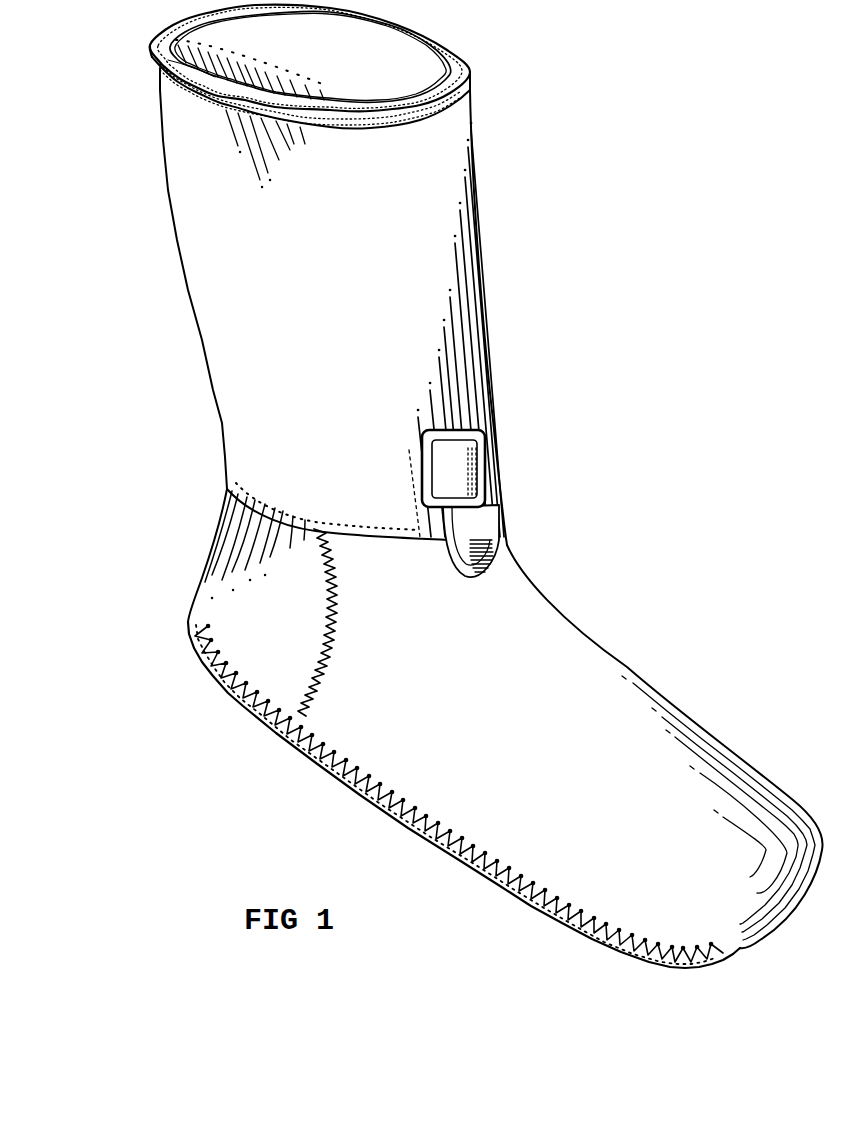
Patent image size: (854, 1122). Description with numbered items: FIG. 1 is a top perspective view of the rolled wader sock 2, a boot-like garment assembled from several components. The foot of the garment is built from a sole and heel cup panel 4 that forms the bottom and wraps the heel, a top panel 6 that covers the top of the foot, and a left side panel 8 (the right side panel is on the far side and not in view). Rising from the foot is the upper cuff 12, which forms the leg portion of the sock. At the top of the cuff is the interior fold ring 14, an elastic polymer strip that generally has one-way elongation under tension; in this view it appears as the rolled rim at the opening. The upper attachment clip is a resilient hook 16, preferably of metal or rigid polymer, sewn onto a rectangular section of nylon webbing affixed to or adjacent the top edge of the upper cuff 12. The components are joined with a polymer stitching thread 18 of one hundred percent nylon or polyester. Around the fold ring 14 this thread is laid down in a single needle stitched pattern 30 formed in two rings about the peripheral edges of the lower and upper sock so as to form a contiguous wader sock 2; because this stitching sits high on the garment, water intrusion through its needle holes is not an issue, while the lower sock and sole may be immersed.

The wader sock 2 is at (648, 220).
The sole and heel cup panel 4 is at (670, 967).
The top panel 6 is at (607, 687).
The left side panel 8 is at (217, 612).
The upper cuff 12 is at (472, 312).
The interior fold ring 14 is at (459, 60).
The resilient hook 16 is at (507, 543).
The stitching thread 18 is at (464, 101).
The single needle stitched pattern 30 is at (187, 88).